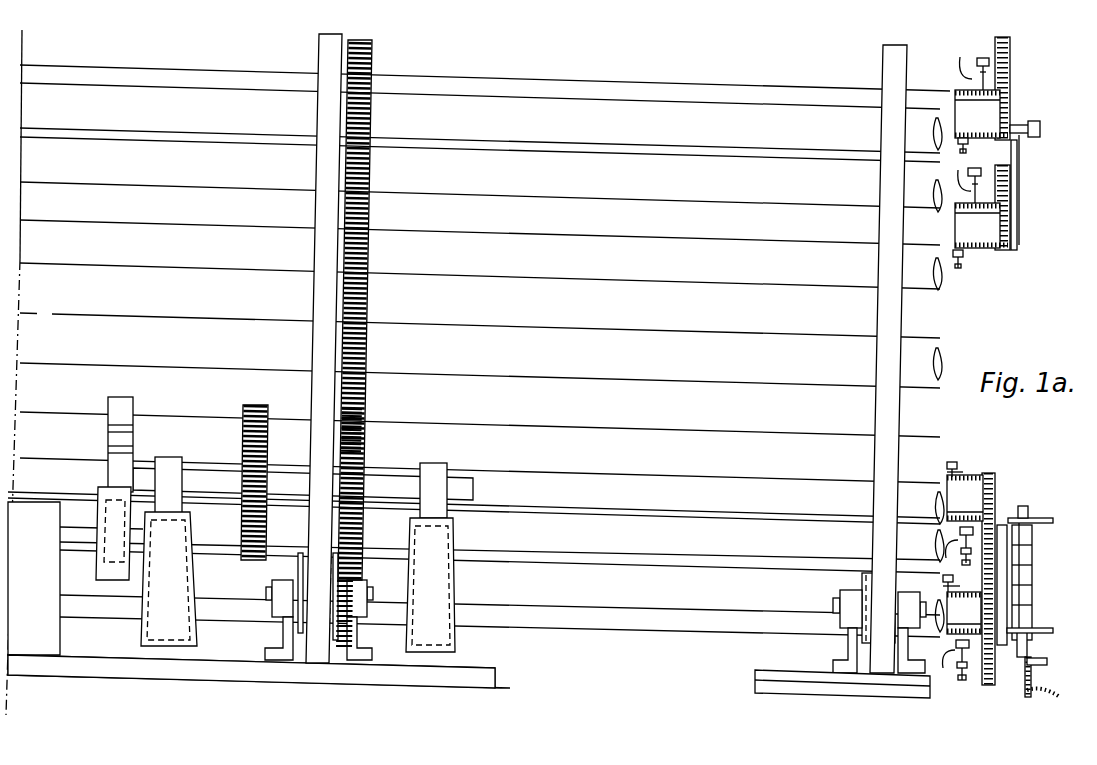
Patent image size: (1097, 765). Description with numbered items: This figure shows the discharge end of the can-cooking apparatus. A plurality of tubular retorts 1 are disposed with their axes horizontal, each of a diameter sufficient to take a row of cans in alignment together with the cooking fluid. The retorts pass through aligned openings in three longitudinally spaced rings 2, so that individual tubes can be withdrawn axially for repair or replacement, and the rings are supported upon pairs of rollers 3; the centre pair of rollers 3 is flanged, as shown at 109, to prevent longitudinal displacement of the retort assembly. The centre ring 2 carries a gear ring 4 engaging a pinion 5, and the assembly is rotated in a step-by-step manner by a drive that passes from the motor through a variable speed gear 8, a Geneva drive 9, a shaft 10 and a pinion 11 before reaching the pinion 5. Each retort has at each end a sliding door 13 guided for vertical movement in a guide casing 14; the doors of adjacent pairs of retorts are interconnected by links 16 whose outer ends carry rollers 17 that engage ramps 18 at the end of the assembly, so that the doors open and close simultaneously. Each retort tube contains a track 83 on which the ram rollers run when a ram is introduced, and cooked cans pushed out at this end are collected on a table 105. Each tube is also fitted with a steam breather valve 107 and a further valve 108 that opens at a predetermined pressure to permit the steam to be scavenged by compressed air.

The tubular retort 1 is at (130, 150).
The ring 2 is at (321, 49).
The roller 3 is at (315, 613).
The gear ring 4 is at (373, 54).
The pinion 5 is at (360, 452).
The variable speed gear 8 is at (34, 578).
The Geneva drive 9 is at (107, 496).
The shaft 10 is at (393, 486).
The pinion 11 is at (244, 430).
The door 13 is at (1008, 96).
The guide casing 14 is at (1011, 47).
The link 16 is at (1019, 160).
The roller 17 is at (1037, 644).
The ramp 18 is at (1035, 660).
The track 83 is at (962, 92).
The table 105 is at (1040, 518).
The steam breather valve 107 is at (958, 150).
The valve 108 is at (978, 62).
The flange 109 is at (338, 560).